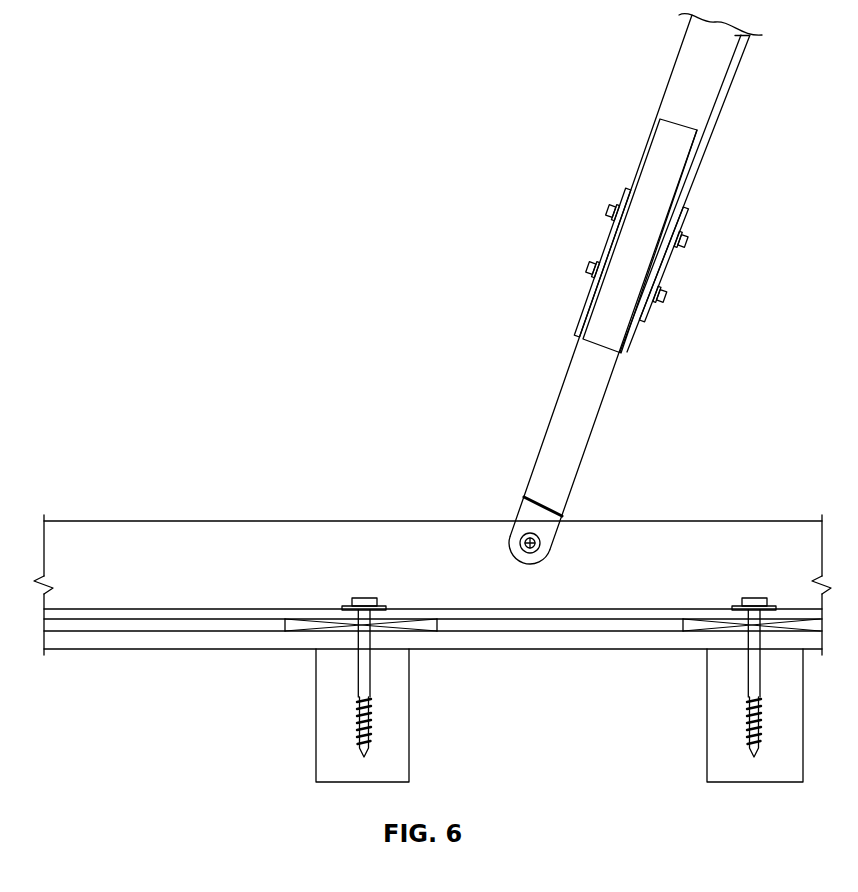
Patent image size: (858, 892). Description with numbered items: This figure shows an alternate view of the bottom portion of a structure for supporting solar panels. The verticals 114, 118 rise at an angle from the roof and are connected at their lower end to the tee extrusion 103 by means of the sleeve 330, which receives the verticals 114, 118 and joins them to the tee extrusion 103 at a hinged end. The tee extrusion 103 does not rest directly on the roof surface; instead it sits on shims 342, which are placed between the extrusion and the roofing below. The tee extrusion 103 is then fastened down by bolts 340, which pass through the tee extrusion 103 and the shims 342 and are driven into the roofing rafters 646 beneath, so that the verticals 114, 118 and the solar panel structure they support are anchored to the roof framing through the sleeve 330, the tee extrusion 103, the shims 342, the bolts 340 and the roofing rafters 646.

The tee extrusion 103 is at (487, 520).
The vertical 114 is at (677, 66).
The vertical 118 is at (741, 48).
The sleeve 330 is at (572, 370).
The bolt 340 is at (353, 598).
The shim 342 is at (303, 619).
The roofing rafter 646 is at (410, 702).